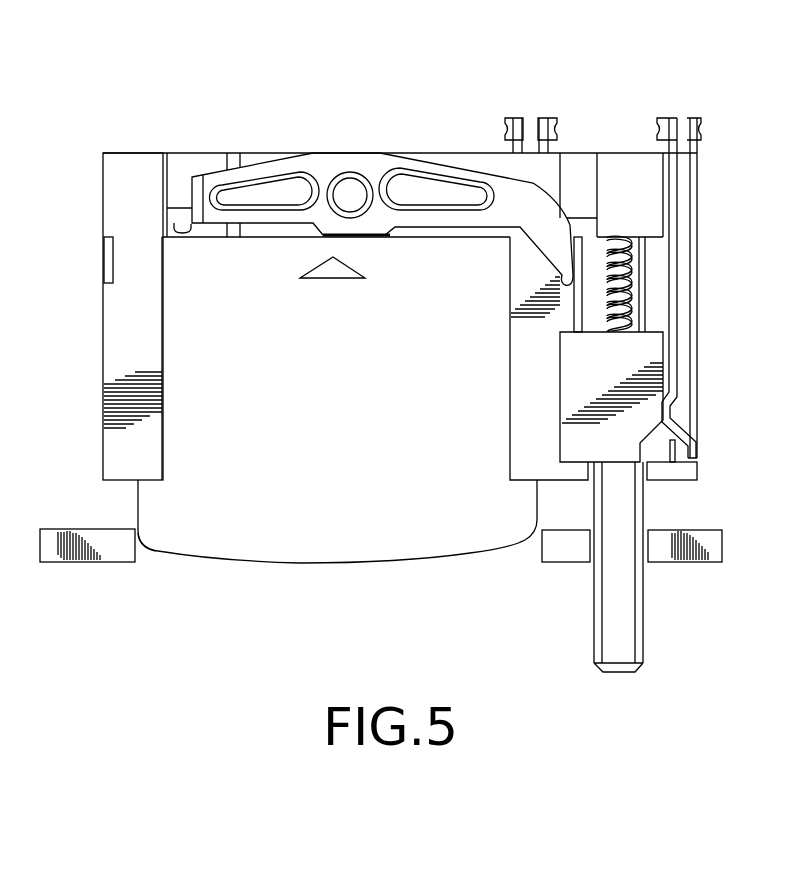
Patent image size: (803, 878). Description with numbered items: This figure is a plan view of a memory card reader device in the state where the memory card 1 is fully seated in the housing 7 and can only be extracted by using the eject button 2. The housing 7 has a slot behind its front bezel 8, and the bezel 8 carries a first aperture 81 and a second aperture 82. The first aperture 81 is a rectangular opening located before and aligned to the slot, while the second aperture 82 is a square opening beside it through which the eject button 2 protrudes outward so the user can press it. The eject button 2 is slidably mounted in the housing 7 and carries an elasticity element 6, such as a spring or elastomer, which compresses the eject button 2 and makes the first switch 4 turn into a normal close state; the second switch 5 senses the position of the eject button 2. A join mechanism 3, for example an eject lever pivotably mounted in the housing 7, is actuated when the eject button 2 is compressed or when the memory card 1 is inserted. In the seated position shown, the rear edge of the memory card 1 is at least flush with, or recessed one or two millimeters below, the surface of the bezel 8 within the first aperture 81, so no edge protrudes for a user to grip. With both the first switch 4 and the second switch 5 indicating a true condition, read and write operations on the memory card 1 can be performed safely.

The memory card 1 is at (320, 540).
The eject button 2 is at (637, 500).
The join mechanism 3 is at (312, 162).
The first switch 4 is at (678, 117).
The second switch 5 is at (532, 117).
The elasticity element 6 is at (632, 292).
The housing 7 is at (135, 177).
The bezel 8 is at (82, 563).
The first aperture 81 is at (143, 550).
The second aperture 82 is at (590, 548).